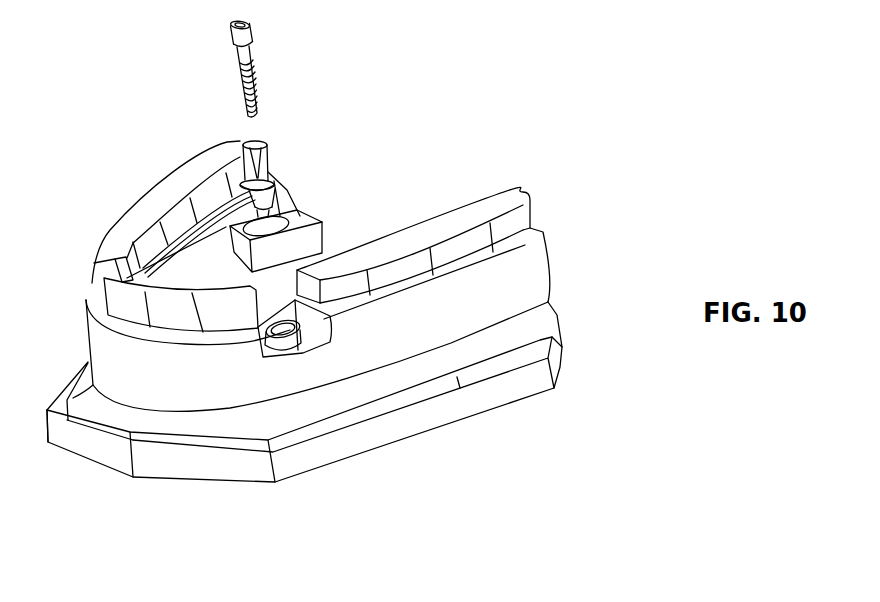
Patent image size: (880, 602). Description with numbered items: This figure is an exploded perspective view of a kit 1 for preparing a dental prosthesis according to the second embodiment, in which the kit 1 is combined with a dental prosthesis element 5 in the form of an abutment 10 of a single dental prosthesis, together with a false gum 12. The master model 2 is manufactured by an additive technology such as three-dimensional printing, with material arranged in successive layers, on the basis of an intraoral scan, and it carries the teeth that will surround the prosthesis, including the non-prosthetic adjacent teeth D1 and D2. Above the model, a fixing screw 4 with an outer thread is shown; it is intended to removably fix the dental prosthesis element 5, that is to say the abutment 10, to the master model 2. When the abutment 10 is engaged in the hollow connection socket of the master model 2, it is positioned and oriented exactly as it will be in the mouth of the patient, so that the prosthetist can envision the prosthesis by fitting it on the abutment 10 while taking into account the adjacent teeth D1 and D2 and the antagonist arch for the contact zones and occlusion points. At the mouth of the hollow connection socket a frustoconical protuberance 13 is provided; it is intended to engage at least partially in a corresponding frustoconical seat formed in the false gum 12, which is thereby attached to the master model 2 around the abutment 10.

The kit 1 is at (112, 186).
The master model 2 is at (452, 327).
The fixing screw 4 is at (249, 44).
The dental prosthesis element 5 is at (311, 179).
The abutment 10 is at (274, 161).
The false gum 12 is at (319, 233).
The frustoconical protuberance 13 is at (283, 341).
The non-prosthetic adjacent tooth D1 is at (227, 315).
The non-prosthetic adjacent tooth D2 is at (330, 288).